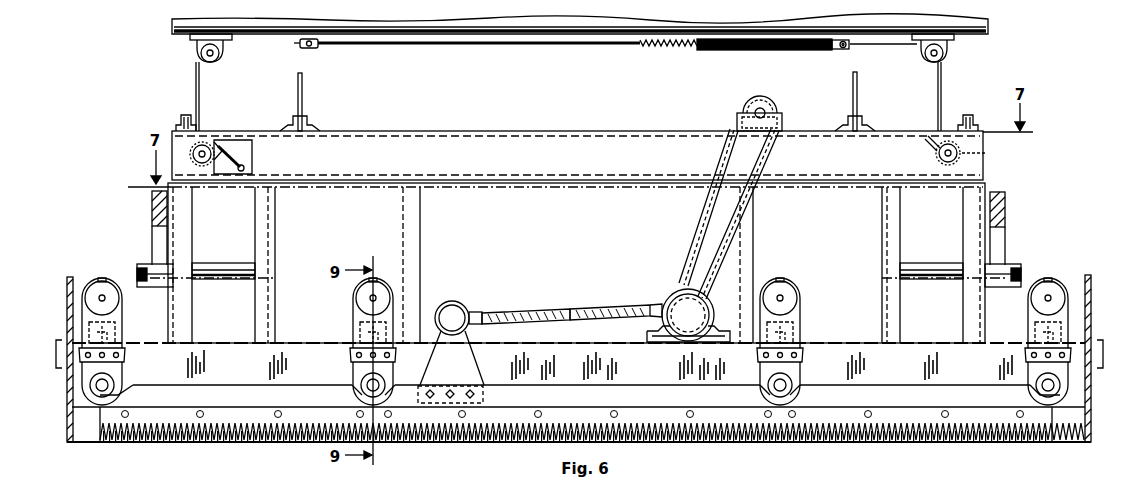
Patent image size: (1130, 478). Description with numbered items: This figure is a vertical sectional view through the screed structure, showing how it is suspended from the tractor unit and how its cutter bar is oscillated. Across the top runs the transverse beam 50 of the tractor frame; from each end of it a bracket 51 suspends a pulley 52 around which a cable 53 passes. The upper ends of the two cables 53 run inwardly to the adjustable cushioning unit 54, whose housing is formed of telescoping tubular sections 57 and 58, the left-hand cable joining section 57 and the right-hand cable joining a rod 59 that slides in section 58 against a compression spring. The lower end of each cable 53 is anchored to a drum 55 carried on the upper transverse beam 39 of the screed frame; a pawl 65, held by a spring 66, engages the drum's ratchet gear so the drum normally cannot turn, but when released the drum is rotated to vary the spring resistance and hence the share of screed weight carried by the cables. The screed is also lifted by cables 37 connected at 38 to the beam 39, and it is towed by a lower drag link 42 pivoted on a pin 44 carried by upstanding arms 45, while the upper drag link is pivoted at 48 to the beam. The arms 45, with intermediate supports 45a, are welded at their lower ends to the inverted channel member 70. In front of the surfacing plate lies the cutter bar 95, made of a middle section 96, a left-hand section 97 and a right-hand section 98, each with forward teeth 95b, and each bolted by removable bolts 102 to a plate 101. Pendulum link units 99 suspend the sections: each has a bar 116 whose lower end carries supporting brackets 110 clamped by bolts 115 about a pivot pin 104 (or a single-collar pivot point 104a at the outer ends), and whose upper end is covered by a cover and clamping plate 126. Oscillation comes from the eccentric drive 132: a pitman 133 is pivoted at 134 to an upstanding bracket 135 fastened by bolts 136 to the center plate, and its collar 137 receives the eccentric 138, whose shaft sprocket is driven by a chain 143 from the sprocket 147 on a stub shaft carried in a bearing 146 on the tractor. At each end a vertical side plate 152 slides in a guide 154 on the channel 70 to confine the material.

The cable 37 is at (303, 78).
The cable connection 38 is at (310, 120).
The upper transverse beam 39 is at (497, 131).
The lower drag link 42 is at (154, 228).
The pin 44 is at (150, 266).
The upstanding arms 45 is at (266, 234).
The intermediate supports 45a is at (420, 238).
The pivot 48 is at (180, 122).
The transverse beam 50 is at (174, 26).
The bracket 51 is at (196, 44).
The pulley 52 is at (218, 58).
The cable 53 is at (199, 100).
The adjustable cushioning unit 54 is at (674, 46).
The drum 55 is at (984, 152).
The tubular section 57 is at (502, 46).
The tubular section 58 is at (812, 51).
The rod 59 is at (840, 50).
The pawl 65 is at (236, 150).
The spring 66 is at (246, 167).
The inverted channel member 70 is at (292, 343).
The cutter bar 95 is at (100, 436).
The teeth or serrations 95b is at (124, 440).
The middle section 96 is at (560, 408).
The left-hand section 97 is at (220, 408).
The right-hand section 98 is at (892, 408).
The pendulum link unit 99 is at (76, 317).
The plate 101 is at (188, 360).
The removable bolts 102 is at (288, 408).
The pivot pin 104 is at (378, 384).
The pivot point 104a is at (100, 386).
The supporting bracket 110 is at (116, 378).
The bolts 115 is at (121, 355).
The bar 116 is at (122, 308).
The cover and clamping plate 126 is at (100, 284).
The eccentric drive 132 is at (518, 313).
The pitman 133 is at (598, 307).
The pivotal connection 134 is at (452, 303).
The upstanding bracket 135 is at (470, 357).
The bolts 136 is at (483, 395).
The collar 137 is at (670, 304).
The eccentric 138 is at (712, 296).
The chain 143 is at (706, 246).
The bearing 146 is at (760, 97).
The sprocket 147 is at (737, 118).
The side plate 152 is at (67, 288).
The guide 154 is at (55, 354).